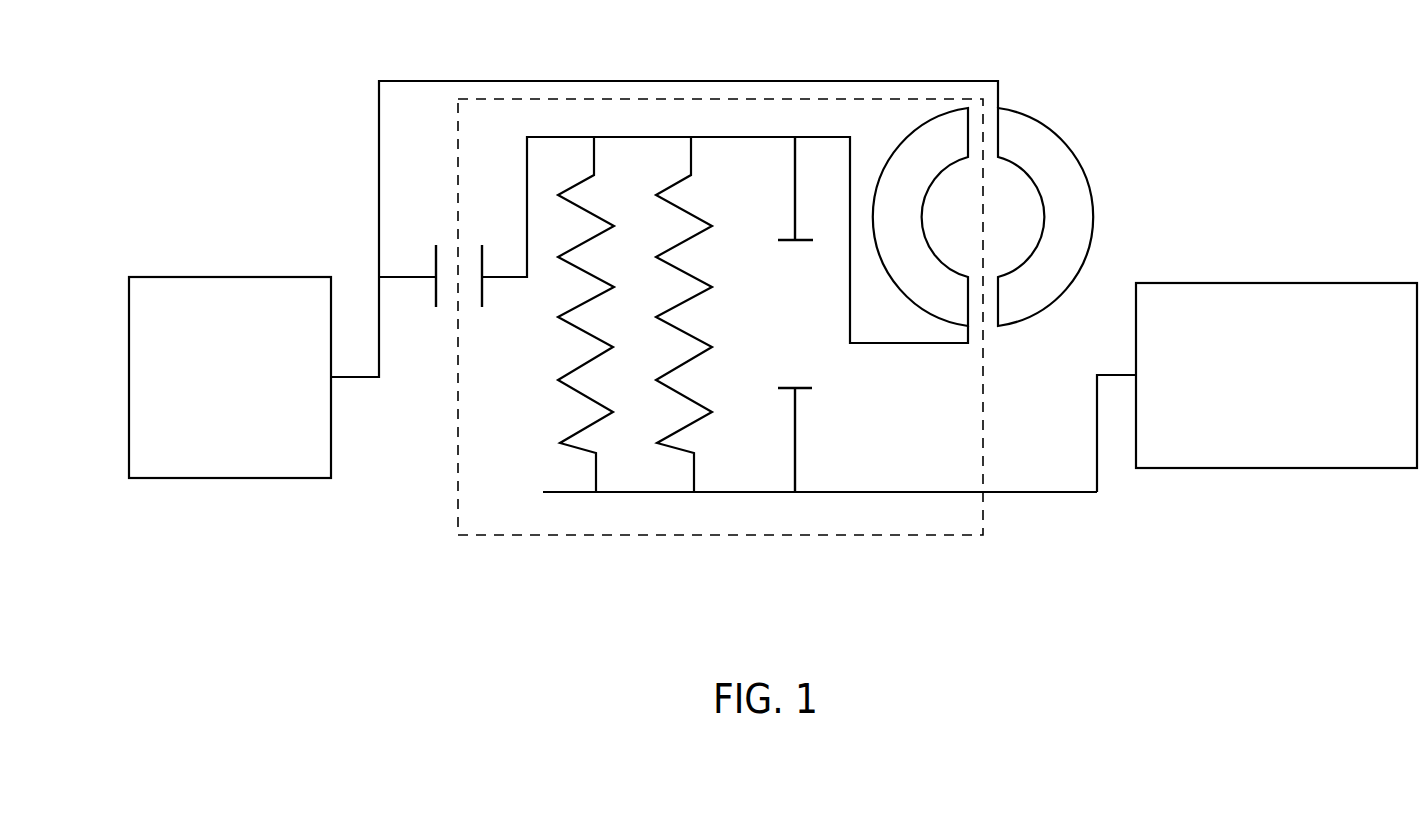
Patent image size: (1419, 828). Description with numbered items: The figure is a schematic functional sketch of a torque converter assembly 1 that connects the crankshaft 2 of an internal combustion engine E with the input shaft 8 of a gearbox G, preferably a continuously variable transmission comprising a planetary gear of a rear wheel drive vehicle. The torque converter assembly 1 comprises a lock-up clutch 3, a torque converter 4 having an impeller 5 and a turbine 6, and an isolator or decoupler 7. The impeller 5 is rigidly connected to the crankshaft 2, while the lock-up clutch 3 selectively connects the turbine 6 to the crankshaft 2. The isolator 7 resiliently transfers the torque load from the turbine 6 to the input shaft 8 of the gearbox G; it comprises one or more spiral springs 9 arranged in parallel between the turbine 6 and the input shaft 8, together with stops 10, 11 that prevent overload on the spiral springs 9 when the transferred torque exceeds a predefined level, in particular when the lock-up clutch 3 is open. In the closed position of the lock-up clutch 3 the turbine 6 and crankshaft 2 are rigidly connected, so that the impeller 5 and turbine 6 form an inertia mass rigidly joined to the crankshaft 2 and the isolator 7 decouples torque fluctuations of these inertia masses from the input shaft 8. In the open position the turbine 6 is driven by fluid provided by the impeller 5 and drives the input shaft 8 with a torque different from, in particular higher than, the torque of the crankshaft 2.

The torque converter assembly 1 is at (722, 99).
The crankshaft 2 is at (363, 382).
The lock-up clutch 3 is at (440, 312).
The torque converter 4 is at (1004, 190).
The impeller 5 is at (1070, 170).
The turbine 6 is at (905, 160).
The isolator 7 is at (642, 494).
The input shaft 8 is at (1112, 372).
The spiral springs 9 is at (588, 362).
The stop 10 is at (797, 423).
The stop 11 is at (793, 199).
The internal combustion engine E is at (201, 294).
The gearbox G is at (1283, 300).